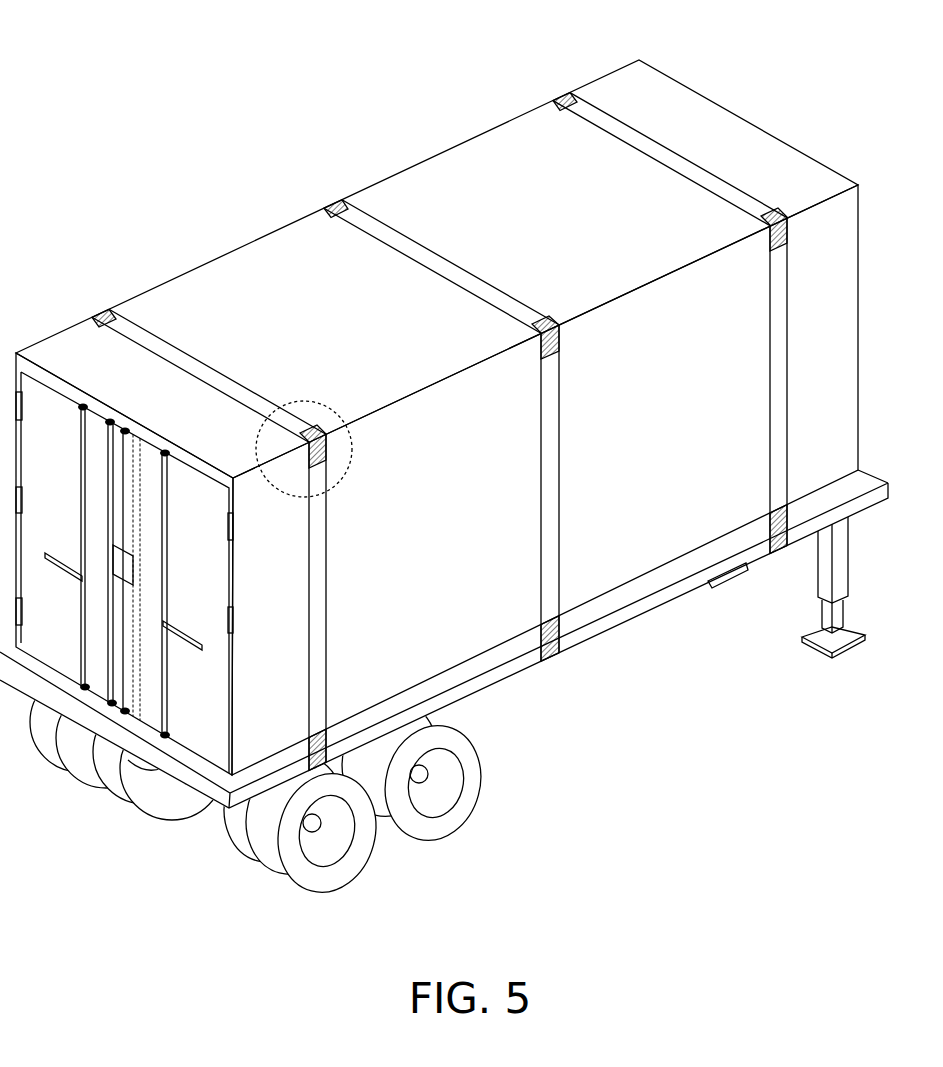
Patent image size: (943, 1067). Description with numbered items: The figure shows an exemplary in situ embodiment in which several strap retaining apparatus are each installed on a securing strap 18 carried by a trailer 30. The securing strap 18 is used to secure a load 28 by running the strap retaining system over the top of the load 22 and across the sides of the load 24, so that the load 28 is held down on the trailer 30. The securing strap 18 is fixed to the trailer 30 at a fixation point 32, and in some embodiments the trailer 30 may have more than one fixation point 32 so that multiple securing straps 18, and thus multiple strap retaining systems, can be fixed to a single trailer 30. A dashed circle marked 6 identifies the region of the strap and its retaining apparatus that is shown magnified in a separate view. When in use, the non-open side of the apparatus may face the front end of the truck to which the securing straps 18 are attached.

The detail area of strap buckle (FIG. 6) 6 is at (347, 468).
The securing strap 18 is at (104, 312).
The top of the load 22 is at (418, 200).
The sides of the load 24 is at (604, 565).
The load 28 is at (53, 632).
The trailer 30 is at (193, 778).
The fixation point 32 is at (305, 770).